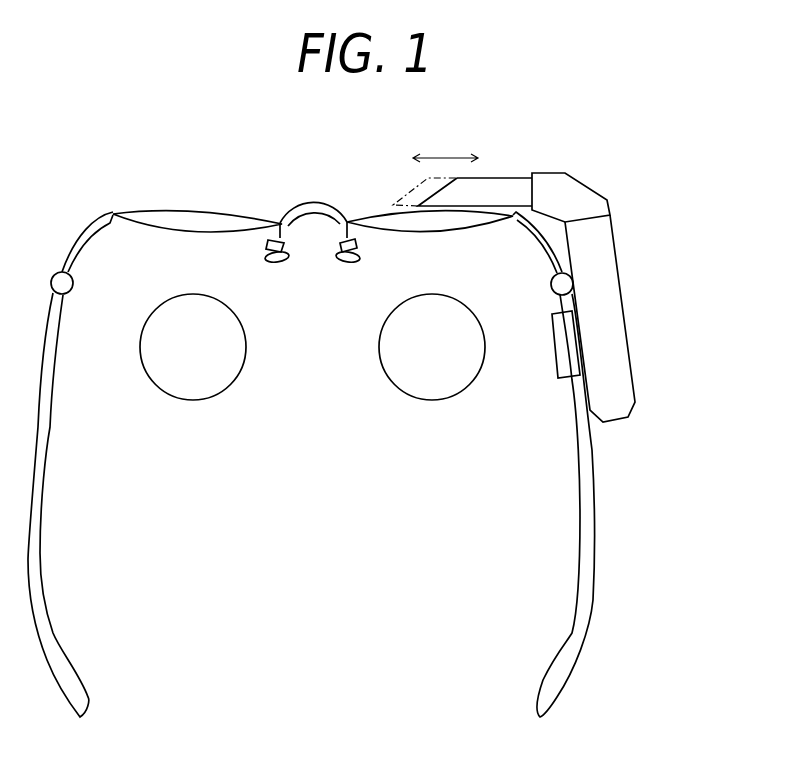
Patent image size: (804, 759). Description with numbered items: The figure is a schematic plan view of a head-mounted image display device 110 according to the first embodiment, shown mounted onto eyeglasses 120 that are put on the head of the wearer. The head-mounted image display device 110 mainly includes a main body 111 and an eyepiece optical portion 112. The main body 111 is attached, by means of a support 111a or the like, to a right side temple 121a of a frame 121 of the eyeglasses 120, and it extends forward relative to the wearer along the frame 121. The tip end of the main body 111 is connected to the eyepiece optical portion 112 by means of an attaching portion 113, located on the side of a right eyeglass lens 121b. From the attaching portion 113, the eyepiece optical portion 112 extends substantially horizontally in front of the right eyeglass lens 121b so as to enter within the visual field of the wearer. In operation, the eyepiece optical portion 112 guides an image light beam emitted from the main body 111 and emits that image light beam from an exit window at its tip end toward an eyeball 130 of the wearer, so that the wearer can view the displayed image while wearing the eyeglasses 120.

The head-mounted image display device 110 is at (558, 270).
The main body 111 is at (623, 385).
The support 111a is at (572, 350).
The eyepiece optical portion 112 is at (515, 187).
The attaching portion 113 is at (588, 197).
The eyeglasses 120 is at (390, 459).
The frame 121 is at (550, 464).
The right side temple 121a is at (590, 572).
The right eyeglass lens 121b is at (463, 223).
The eyeball 130 is at (435, 387).